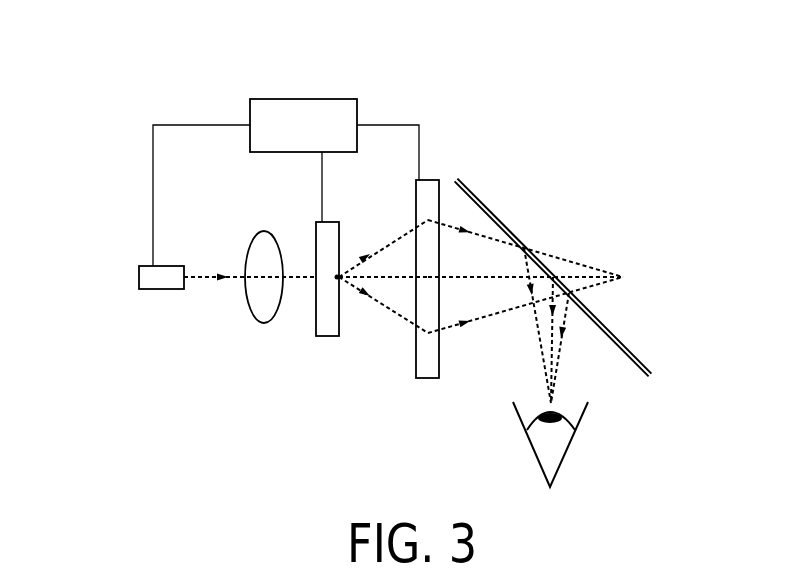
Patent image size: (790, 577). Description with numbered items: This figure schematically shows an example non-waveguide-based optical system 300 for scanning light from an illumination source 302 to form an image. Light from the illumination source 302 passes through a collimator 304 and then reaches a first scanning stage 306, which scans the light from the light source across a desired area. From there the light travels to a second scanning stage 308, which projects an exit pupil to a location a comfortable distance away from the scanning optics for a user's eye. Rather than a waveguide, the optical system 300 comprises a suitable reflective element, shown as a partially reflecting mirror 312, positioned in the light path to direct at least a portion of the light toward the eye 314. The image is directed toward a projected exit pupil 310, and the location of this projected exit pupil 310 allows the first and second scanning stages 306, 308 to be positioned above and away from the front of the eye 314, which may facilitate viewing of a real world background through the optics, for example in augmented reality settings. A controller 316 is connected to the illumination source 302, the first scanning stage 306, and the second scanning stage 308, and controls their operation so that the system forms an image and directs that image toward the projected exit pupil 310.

The optical system 300 is at (150, 72).
The illumination source 302 is at (162, 266).
The collimator 304 is at (264, 232).
The first scanning stage 306 is at (328, 222).
The second scanning stage 308 is at (430, 180).
The projected exit pupil 310 is at (623, 277).
The partially reflecting mirror 312 is at (615, 332).
The eye 314 is at (570, 448).
The controller 316 is at (305, 99).